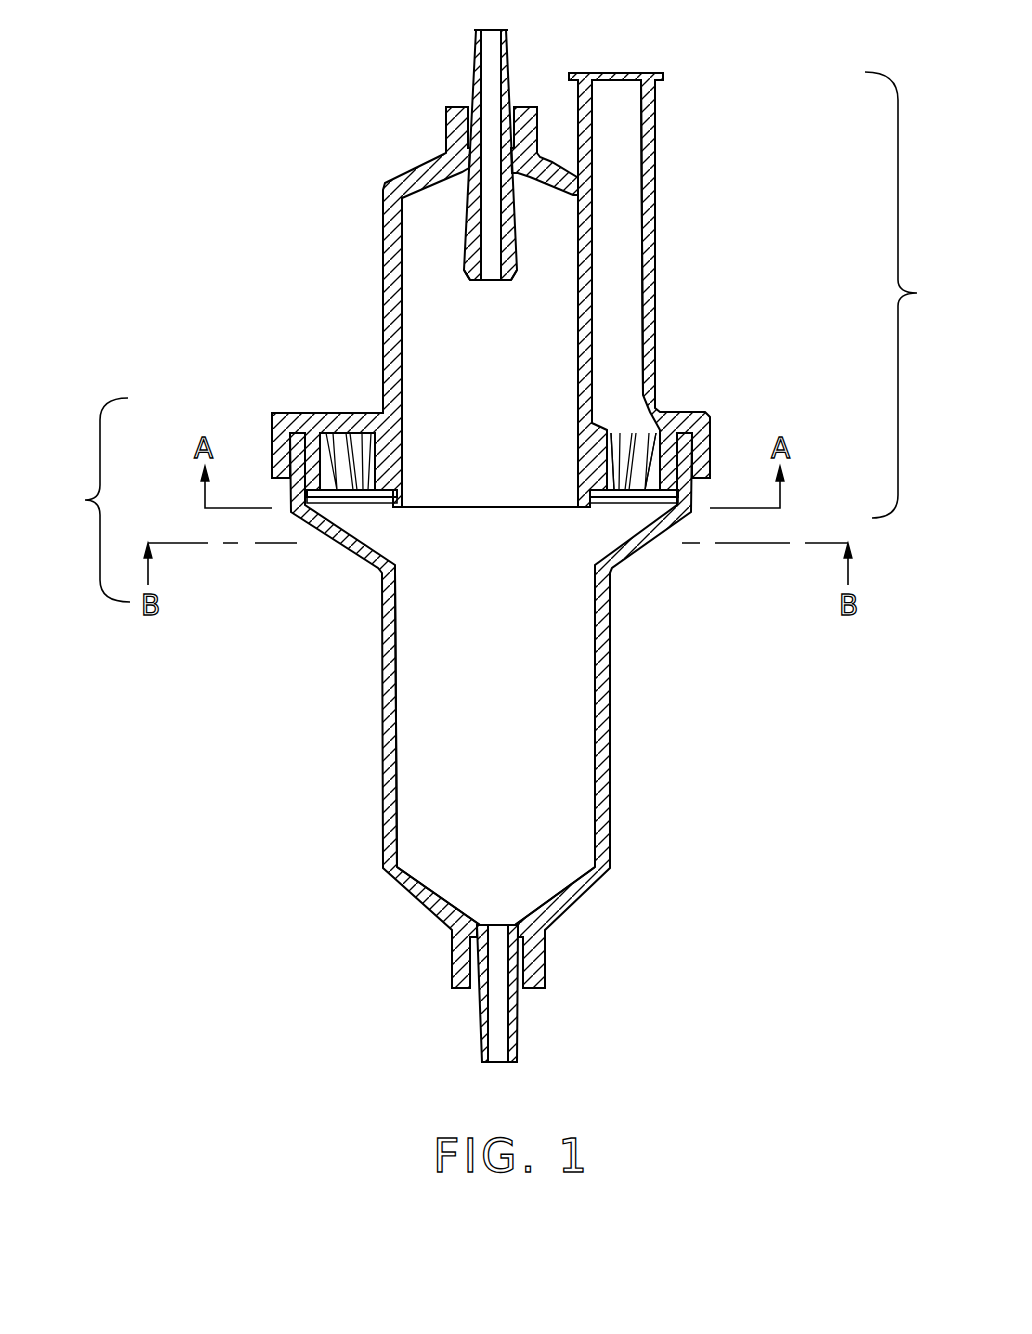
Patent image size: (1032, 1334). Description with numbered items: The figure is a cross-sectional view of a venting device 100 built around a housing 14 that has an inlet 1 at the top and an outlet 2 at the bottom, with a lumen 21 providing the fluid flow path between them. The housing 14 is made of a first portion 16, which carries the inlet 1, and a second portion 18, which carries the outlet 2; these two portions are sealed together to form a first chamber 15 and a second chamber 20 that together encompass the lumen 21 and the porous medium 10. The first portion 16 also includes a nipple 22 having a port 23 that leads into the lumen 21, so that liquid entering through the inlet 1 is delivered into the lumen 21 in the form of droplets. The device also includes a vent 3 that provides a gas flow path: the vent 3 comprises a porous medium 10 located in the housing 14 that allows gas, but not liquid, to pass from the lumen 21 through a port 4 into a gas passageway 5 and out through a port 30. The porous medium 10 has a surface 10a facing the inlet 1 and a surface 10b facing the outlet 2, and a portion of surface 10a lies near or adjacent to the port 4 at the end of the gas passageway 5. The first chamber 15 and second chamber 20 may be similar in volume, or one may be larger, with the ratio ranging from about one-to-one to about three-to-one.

The inlet 1 is at (477, 62).
The outlet 2 is at (518, 1037).
The vent 3 is at (906, 295).
The port 4 is at (622, 427).
The gas passageway 5 is at (617, 330).
The porous medium 10 is at (355, 505).
The first surface 10a is at (662, 425).
The second surface 10b is at (610, 500).
The housing 14 is at (80, 500).
The first chamber 15 is at (463, 372).
The first portion 16 is at (388, 220).
The second portion 18 is at (385, 750).
The second chamber 20 is at (478, 833).
The lumen 21 is at (512, 455).
The nipple 22 is at (475, 252).
The port 23 is at (492, 270).
The port 30 is at (618, 80).
The device 100 is at (282, 1053).